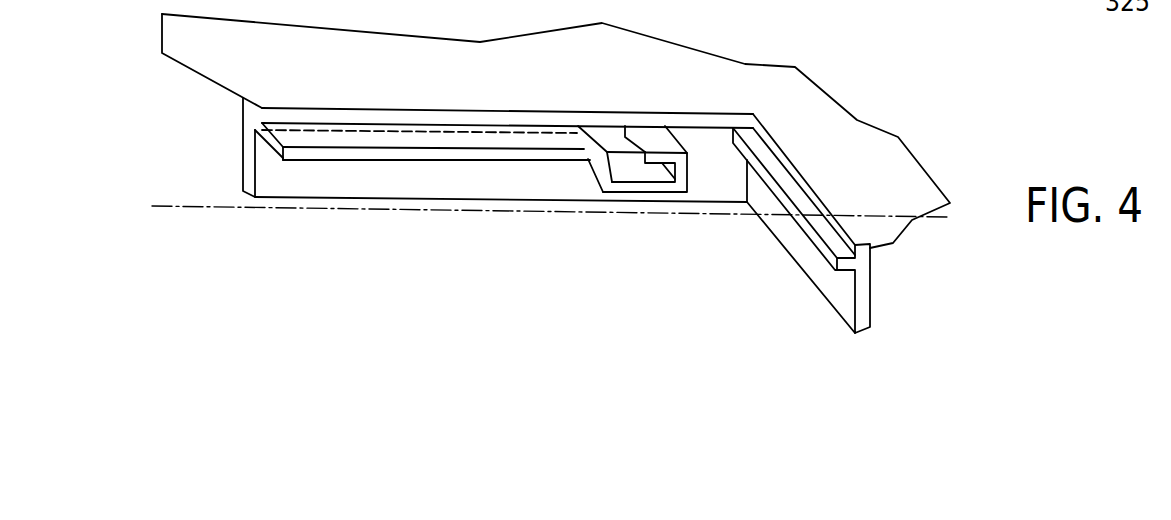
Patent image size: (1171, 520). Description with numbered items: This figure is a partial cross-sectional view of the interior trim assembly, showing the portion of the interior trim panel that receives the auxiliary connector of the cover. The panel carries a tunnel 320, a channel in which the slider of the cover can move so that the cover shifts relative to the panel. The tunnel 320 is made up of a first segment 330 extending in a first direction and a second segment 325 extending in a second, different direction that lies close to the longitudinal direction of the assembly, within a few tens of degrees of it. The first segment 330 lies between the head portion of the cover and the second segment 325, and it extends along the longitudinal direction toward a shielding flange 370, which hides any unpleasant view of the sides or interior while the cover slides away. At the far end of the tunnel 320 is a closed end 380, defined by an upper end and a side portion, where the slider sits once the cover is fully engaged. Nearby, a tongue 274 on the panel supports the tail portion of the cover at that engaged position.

The tongue 274 is at (824, 238).
The tunnel 320 is at (584, 215).
The second segment 325 is at (657, 181).
The first segment 330 is at (611, 172).
The shielding flange 370 is at (416, 144).
The closed end 380 is at (691, 143).